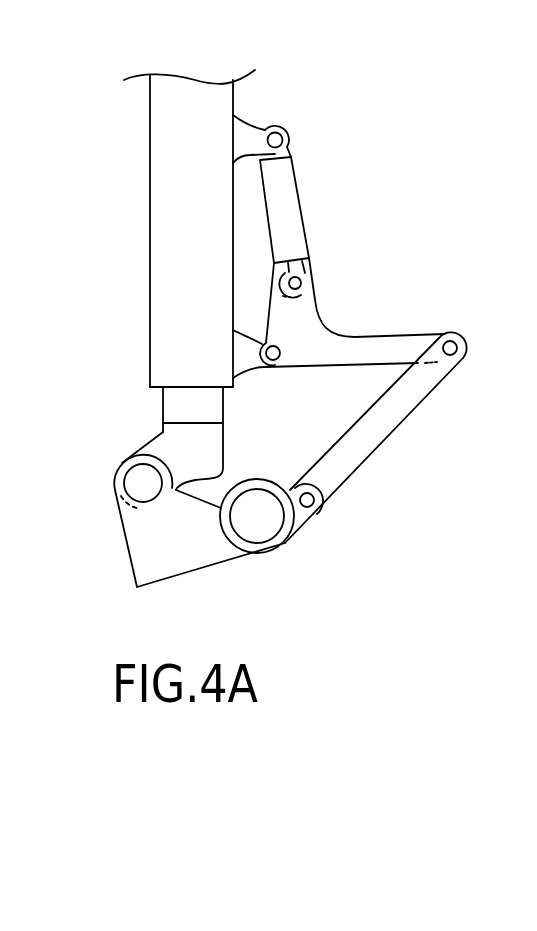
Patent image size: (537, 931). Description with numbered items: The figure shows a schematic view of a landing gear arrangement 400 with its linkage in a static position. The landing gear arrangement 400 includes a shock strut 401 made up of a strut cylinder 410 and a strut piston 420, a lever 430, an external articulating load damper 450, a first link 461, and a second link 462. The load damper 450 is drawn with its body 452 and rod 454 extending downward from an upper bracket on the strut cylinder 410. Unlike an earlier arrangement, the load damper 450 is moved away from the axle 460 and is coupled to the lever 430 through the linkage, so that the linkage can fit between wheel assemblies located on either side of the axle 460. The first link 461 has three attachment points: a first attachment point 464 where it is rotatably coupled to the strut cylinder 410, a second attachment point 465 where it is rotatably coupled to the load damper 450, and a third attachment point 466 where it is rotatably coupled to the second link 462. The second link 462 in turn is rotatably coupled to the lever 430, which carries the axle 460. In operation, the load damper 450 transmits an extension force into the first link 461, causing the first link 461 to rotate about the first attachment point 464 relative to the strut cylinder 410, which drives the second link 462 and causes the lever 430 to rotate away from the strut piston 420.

The landing gear arrangement 400 is at (360, 94).
The shock strut 401 is at (160, 343).
The strut cylinder 410 is at (167, 195).
The strut piston 420 is at (168, 402).
The lever 430 is at (136, 560).
The external articulating load damper 450 is at (285, 187).
The shock body 452 is at (297, 237).
The shock rod 454 is at (302, 263).
The axle 460 is at (305, 530).
The first link 461 is at (357, 348).
The second link 462 is at (380, 433).
The first attachment point 464 is at (273, 362).
The second attachment point 465 is at (295, 283).
The third attachment point 466 is at (450, 348).